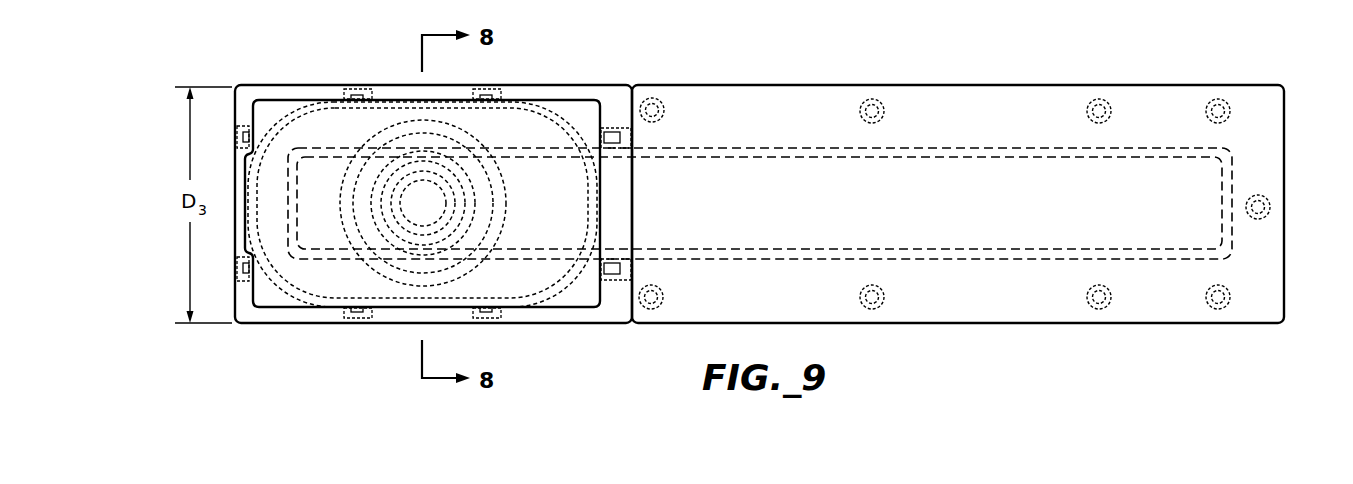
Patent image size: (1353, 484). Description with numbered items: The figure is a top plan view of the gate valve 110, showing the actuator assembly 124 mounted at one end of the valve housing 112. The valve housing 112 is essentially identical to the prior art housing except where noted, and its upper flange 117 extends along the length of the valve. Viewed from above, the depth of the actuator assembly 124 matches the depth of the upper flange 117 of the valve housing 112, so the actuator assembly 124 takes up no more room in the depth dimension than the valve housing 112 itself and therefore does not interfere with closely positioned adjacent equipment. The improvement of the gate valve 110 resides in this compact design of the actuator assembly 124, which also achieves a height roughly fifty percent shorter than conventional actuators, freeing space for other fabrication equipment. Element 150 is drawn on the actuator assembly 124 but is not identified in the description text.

The gate valve 110 is at (992, 76).
The valve housing 112 is at (822, 298).
The upper flange 117 is at (1080, 278).
The actuator assembly 124 is at (540, 78).
The cassette cover 150 is at (320, 92).